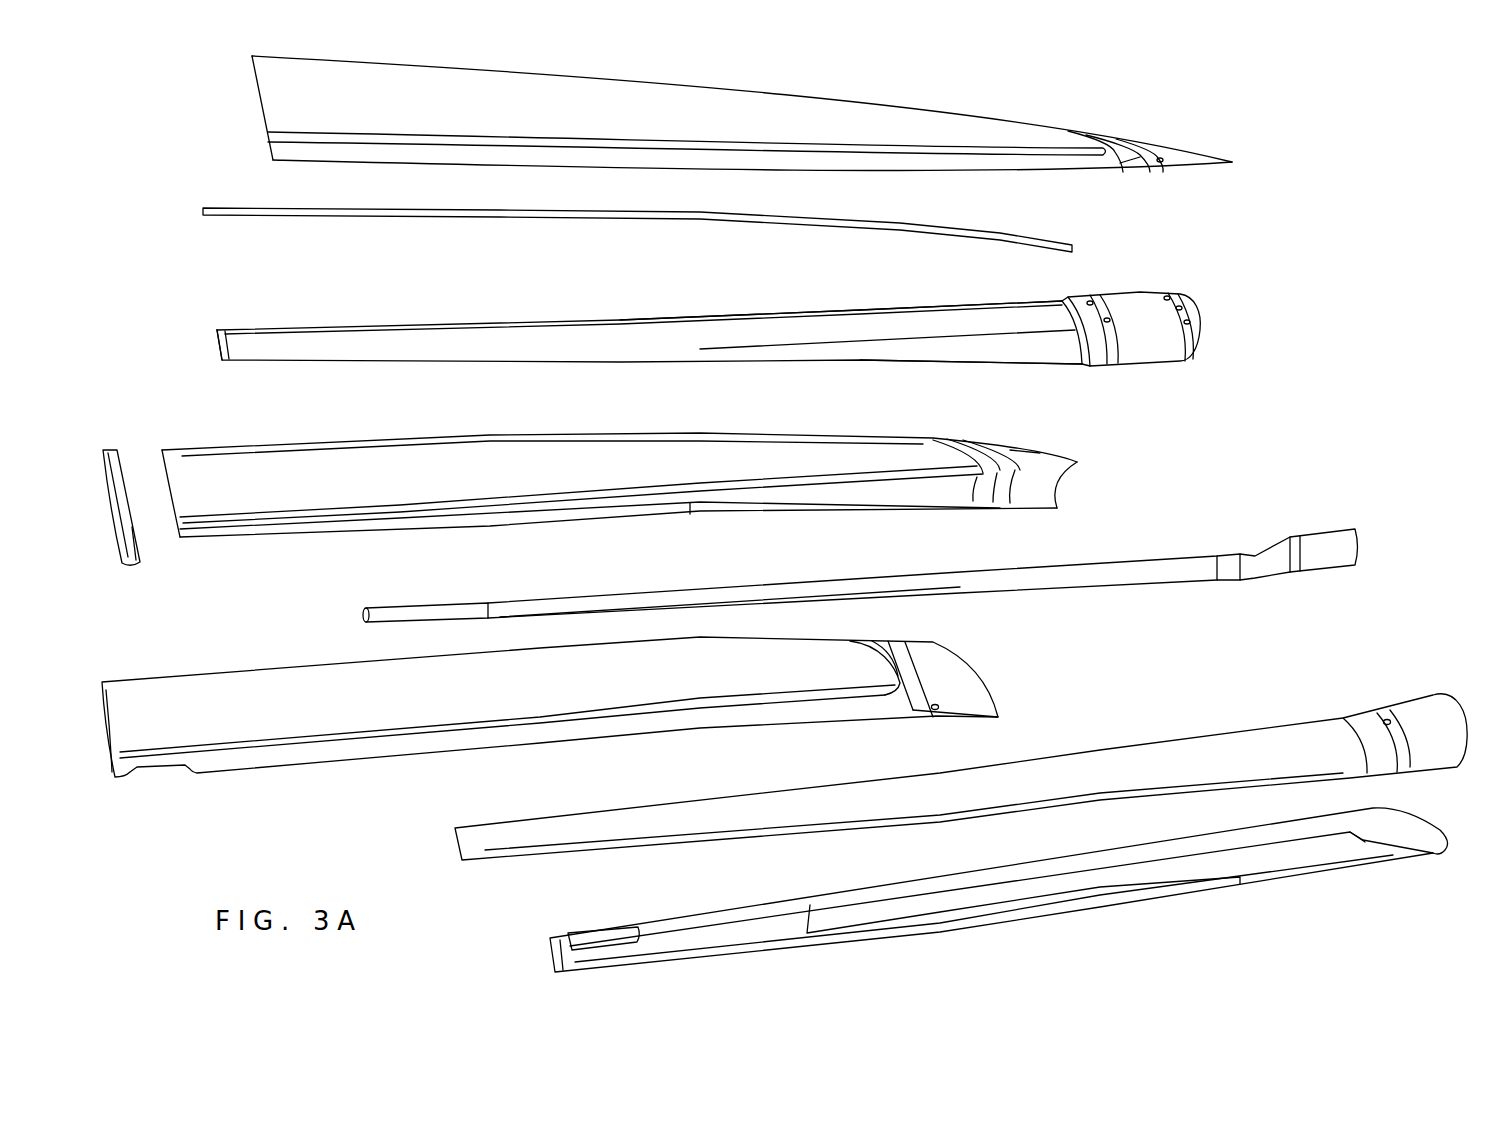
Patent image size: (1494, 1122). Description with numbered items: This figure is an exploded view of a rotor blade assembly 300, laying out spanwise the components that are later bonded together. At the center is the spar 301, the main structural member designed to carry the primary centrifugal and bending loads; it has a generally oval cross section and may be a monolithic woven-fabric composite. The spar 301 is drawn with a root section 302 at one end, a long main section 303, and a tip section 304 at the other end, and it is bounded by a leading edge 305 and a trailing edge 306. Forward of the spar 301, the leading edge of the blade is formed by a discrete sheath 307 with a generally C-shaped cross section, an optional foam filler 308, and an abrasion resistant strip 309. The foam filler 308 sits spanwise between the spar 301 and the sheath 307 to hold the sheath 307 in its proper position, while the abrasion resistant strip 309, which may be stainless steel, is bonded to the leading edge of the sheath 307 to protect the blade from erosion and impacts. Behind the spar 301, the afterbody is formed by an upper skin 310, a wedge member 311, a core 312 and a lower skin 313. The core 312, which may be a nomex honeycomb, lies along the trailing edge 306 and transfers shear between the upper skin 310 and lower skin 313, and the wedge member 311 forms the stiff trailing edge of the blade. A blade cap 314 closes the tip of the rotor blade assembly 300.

The rotor blade assembly 300 is at (1333, 290).
The spar 301 is at (492, 338).
The root section 302 is at (1120, 305).
The main section 303 is at (742, 326).
The tip section 304 is at (240, 340).
The leading edge 305 is at (899, 366).
The trailing edge 306 is at (835, 310).
The sheath 307 is at (1168, 752).
The foam filler 308 is at (1105, 563).
The abrasion resistant strip 309 is at (1280, 872).
The upper skin 310 is at (975, 122).
The wedge member 311 is at (228, 207).
The core 312 is at (240, 466).
The lower skin 313 is at (255, 672).
The blade cap 314 is at (128, 568).